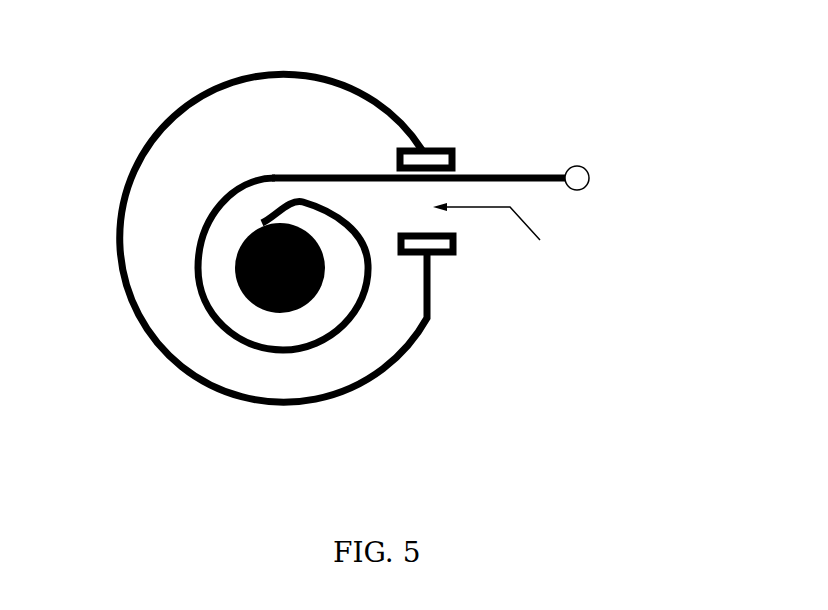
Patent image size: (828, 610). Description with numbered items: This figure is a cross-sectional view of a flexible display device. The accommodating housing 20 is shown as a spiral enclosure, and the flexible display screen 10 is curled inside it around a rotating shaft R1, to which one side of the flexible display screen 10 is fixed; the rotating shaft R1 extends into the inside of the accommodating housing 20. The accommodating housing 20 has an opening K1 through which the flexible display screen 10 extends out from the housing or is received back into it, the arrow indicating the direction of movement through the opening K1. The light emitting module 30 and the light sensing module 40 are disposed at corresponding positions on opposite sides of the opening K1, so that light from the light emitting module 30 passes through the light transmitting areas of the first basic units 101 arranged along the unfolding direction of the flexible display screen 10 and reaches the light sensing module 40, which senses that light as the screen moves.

The accommodating housing 20 is at (164, 134).
The flexible display screen 10 is at (492, 175).
The light emitting module 30 is at (450, 148).
The light sensing module 40 is at (443, 256).
The first basic unit 101 is at (577, 176).
The opening K1 is at (513, 235).
The rotating shaft R1 is at (290, 312).